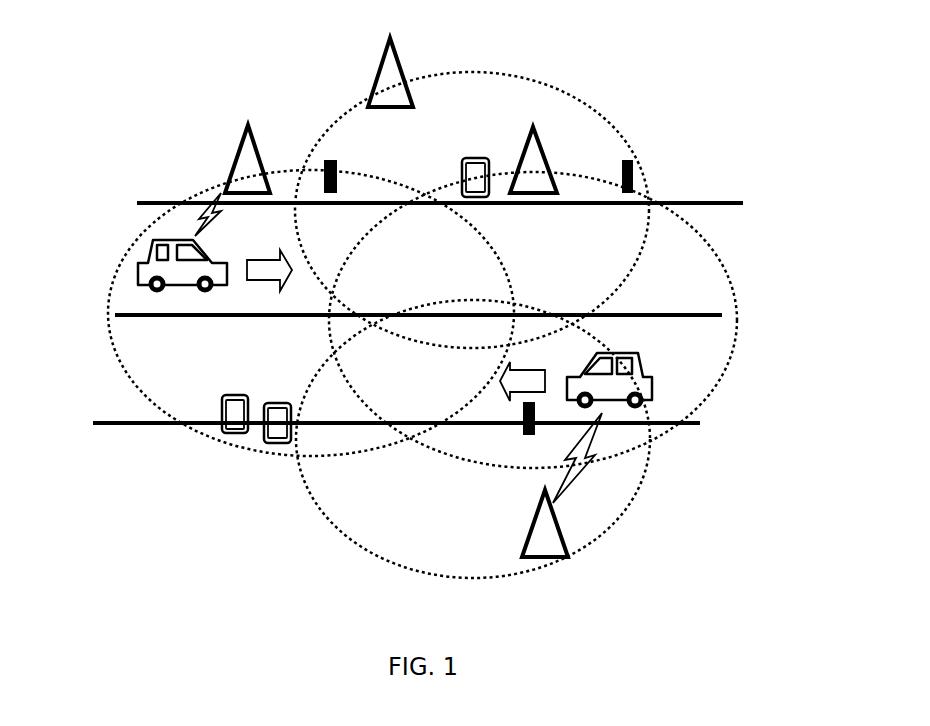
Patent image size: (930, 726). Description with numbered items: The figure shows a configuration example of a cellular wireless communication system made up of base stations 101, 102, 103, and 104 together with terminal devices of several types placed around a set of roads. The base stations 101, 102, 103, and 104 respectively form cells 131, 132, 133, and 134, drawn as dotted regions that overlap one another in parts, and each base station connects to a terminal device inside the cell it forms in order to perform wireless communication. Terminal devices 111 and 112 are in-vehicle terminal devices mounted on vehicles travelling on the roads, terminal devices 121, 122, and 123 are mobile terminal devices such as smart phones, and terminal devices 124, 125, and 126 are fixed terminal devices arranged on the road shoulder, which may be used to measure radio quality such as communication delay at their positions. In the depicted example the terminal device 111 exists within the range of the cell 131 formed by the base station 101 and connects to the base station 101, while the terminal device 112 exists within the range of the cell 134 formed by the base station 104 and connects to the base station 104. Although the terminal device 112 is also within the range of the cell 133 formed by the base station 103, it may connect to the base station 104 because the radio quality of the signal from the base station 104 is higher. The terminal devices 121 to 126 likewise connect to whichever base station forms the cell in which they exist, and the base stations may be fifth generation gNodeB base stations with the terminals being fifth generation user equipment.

The base station 101 is at (247, 157).
The base station 102 is at (392, 80).
The base station 103 is at (533, 165).
The base station 104 is at (538, 545).
The terminal device 111 is at (143, 272).
The terminal device 112 is at (645, 385).
The terminal device 121 is at (223, 433).
The terminal device 122 is at (277, 445).
The terminal device 123 is at (480, 160).
The terminal device 124 is at (328, 160).
The terminal device 125 is at (633, 178).
The terminal device 126 is at (522, 437).
The cell 131 is at (110, 323).
The cell 132 is at (530, 77).
The cell 133 is at (735, 280).
The cell 134 is at (355, 545).